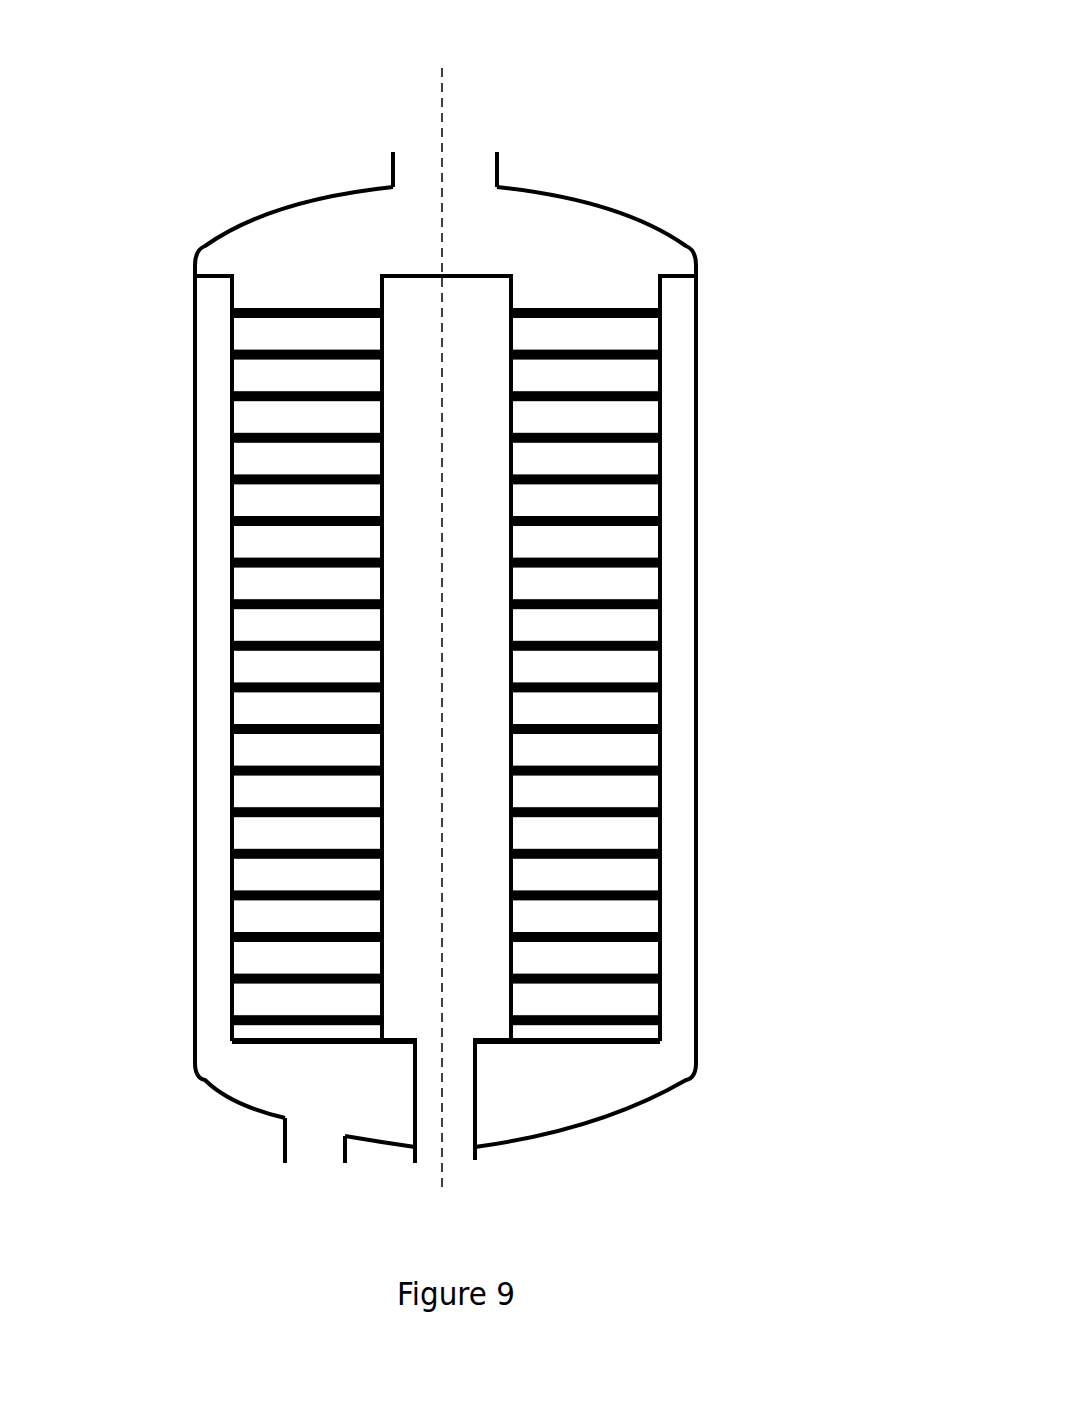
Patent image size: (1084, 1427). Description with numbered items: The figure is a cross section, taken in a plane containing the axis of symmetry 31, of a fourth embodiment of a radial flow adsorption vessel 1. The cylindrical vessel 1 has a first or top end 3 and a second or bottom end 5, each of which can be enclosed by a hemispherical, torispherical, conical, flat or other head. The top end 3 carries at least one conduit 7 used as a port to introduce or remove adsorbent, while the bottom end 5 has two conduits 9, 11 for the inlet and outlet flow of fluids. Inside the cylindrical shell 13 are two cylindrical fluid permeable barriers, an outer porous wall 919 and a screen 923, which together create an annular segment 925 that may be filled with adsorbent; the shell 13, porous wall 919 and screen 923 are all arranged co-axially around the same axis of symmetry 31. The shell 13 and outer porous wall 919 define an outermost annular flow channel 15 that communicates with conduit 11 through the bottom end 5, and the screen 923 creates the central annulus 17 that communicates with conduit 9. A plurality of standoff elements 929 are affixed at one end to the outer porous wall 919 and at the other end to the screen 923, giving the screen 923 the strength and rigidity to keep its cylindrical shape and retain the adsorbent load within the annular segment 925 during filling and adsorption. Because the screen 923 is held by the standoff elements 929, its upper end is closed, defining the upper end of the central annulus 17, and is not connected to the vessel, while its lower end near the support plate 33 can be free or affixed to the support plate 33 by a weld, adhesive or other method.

The vessel 1 is at (727, 399).
The first or top end 3 is at (613, 215).
The second or bottom end 5 is at (657, 1100).
The conduit 7 is at (467, 155).
The conduit 9 is at (455, 1140).
The conduit 11 is at (313, 1175).
The shell 13 is at (700, 703).
The outermost annular flow channel 15 is at (680, 897).
The central annulus 17 is at (470, 538).
The axis of symmetry 31 is at (438, 78).
The support plate 33 is at (565, 1042).
The outer porous wall 919 is at (237, 828).
The screen 923 is at (380, 922).
The annular segment 925 is at (313, 547).
The standoff elements 929 is at (280, 688).